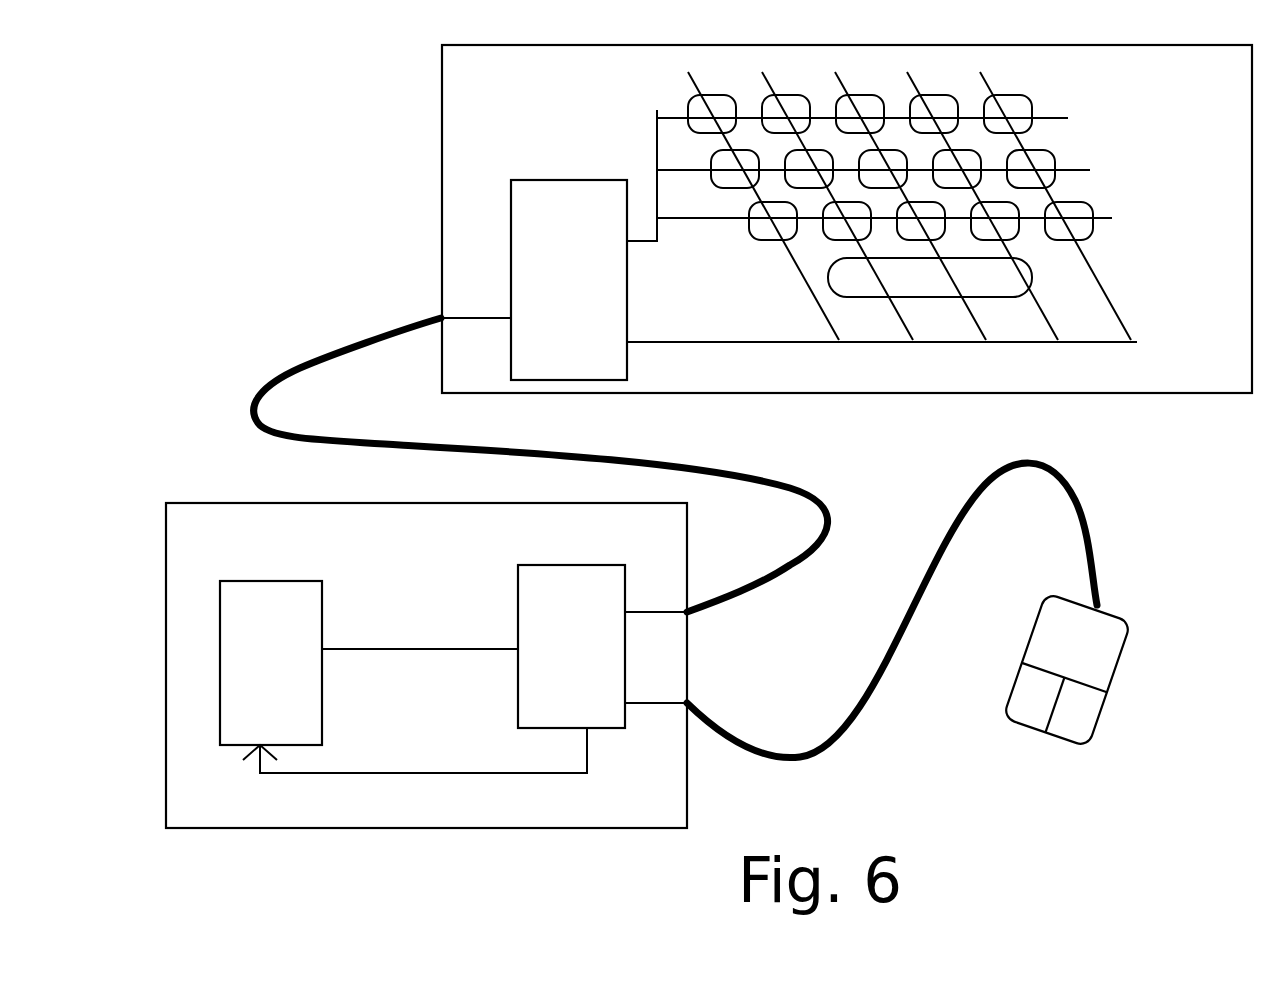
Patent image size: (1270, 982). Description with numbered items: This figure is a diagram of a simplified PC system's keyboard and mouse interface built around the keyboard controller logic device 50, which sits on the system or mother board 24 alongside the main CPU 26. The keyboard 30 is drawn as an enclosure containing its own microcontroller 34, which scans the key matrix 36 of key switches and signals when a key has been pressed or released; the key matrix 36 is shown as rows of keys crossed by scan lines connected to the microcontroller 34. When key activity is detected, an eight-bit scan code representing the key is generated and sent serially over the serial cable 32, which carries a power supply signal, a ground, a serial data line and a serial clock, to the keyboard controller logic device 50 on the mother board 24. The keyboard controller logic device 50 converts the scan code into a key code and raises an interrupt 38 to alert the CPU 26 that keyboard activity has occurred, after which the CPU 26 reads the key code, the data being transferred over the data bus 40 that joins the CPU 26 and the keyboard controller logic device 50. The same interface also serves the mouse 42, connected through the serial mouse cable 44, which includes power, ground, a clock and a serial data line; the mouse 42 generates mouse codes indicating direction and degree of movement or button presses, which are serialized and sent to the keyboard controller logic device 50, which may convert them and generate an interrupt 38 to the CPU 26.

The mother board 24 is at (243, 503).
The CPU 26 is at (291, 581).
The keyboard 30 is at (441, 145).
The serial cable 32 is at (307, 363).
The microcontroller 34 is at (610, 179).
The key matrix 36 is at (1048, 150).
The interrupt 38 is at (518, 773).
The data bus 40 is at (446, 649).
The mouse 42 is at (1118, 647).
The serial mouse cable 44 is at (877, 703).
The keyboard controller logic device 50 is at (531, 565).